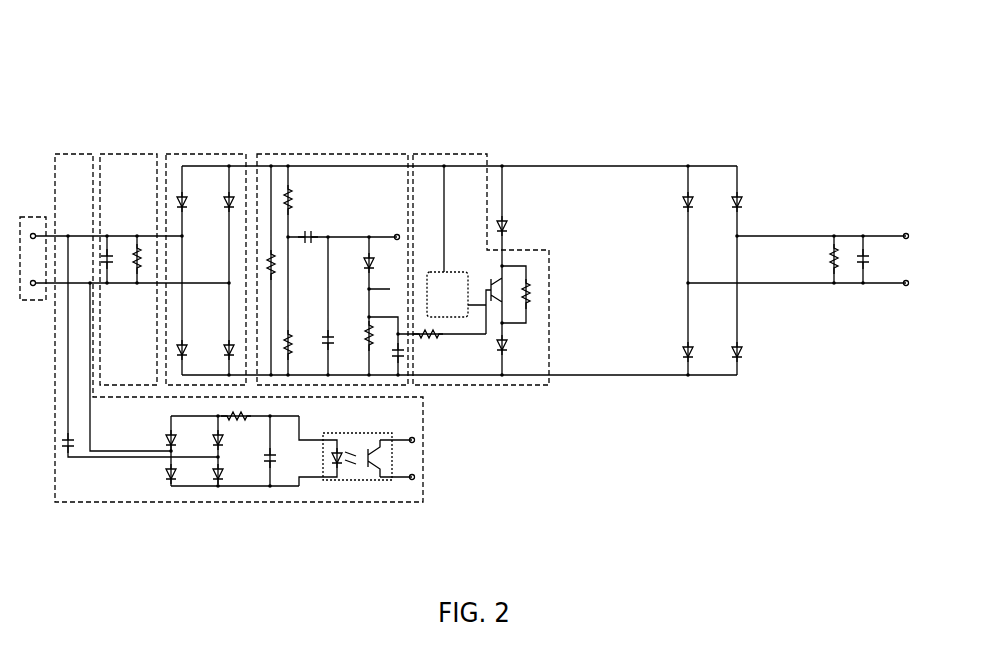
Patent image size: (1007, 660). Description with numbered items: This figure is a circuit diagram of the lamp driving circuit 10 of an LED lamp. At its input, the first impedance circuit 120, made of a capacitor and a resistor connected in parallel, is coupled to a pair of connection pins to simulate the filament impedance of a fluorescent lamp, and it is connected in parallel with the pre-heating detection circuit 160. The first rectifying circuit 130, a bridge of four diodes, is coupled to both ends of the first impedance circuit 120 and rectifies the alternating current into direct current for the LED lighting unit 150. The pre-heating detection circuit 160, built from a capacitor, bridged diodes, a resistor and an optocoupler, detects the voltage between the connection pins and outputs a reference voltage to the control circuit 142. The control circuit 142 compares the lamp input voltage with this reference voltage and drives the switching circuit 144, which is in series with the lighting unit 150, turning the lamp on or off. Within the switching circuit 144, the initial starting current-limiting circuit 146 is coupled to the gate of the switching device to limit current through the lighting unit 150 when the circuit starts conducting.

The lamp driving circuit 10 is at (150, 60).
The pre-heating detection circuit 160 is at (72, 152).
The first impedance circuit 120 is at (128, 152).
The first rectifying circuit 130 is at (205, 152).
The control circuit 142 is at (326, 152).
The switching circuit 144 is at (426, 152).
The initial starting current-limiting circuit 146 is at (449, 270).
The LED lighting unit 150 is at (518, 270).